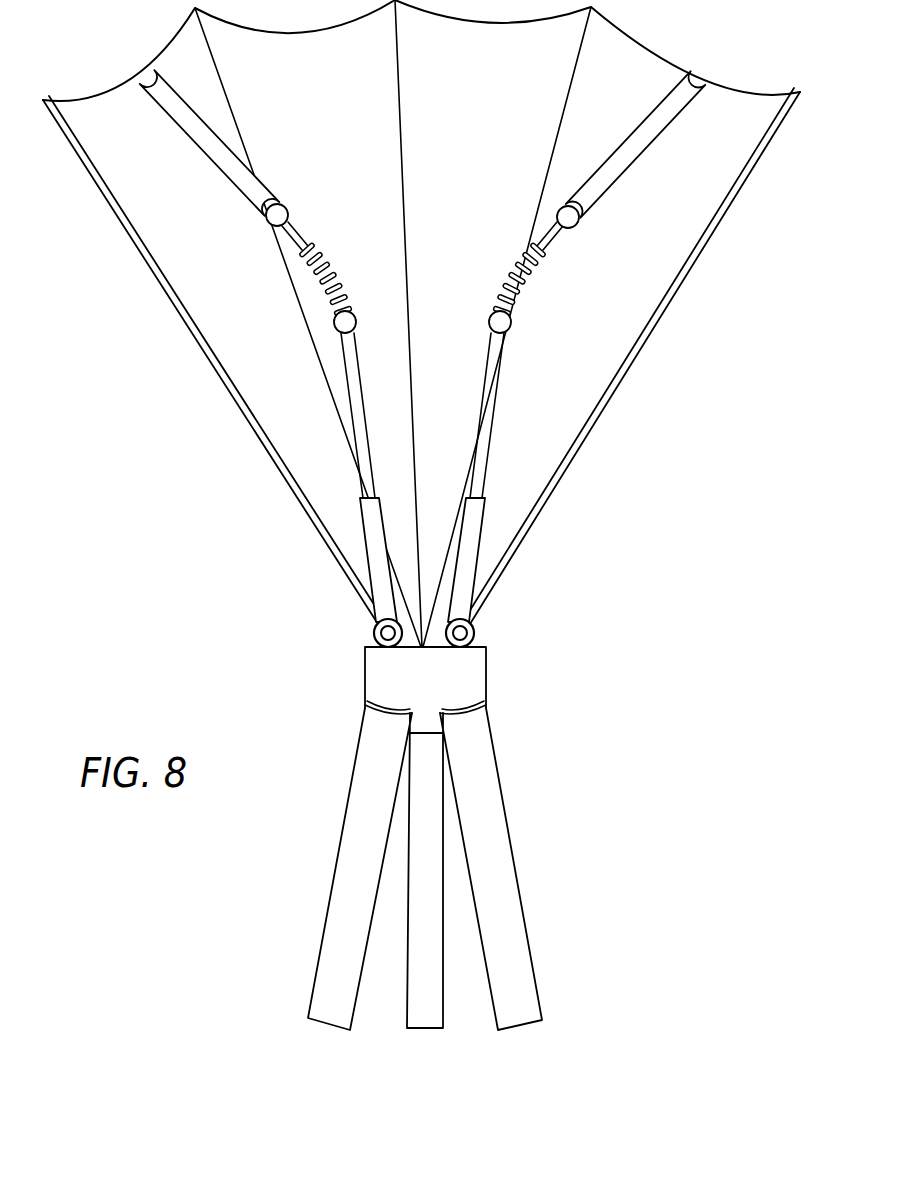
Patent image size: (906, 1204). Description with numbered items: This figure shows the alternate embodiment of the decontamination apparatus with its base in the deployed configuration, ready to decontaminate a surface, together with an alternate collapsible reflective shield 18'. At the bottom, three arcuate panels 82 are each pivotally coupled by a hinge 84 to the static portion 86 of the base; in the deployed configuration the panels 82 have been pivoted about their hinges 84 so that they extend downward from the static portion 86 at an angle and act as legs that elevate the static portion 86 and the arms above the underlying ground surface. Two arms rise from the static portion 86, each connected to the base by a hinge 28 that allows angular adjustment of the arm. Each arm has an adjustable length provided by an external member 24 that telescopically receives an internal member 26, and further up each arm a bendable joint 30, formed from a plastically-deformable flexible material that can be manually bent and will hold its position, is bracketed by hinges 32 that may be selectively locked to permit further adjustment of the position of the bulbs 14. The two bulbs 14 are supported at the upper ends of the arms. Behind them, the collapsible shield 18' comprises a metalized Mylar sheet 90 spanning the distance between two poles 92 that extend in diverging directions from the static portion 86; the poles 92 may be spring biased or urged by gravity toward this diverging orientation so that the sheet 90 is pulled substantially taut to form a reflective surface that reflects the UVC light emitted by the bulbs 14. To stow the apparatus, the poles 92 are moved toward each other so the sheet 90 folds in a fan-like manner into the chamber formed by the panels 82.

The sheet 90 is at (471, 102).
The poles 92 is at (205, 353).
The collapsible reflective shield 18' is at (129, 248).
The bulbs 14 is at (203, 147).
The hinge 32 is at (283, 214).
The bendable joint 30 is at (345, 279).
The internal member 26 is at (357, 412).
The external member 24 is at (372, 510).
The hinge 28 is at (376, 630).
The static portion 86 is at (378, 668).
The hinge 84 is at (372, 702).
The arcuate panels 82 is at (488, 714).